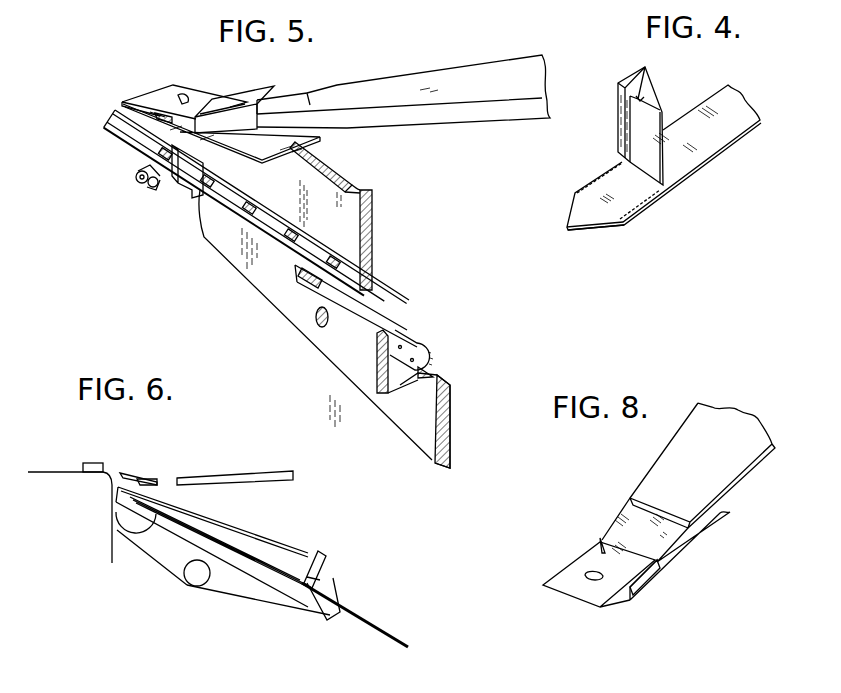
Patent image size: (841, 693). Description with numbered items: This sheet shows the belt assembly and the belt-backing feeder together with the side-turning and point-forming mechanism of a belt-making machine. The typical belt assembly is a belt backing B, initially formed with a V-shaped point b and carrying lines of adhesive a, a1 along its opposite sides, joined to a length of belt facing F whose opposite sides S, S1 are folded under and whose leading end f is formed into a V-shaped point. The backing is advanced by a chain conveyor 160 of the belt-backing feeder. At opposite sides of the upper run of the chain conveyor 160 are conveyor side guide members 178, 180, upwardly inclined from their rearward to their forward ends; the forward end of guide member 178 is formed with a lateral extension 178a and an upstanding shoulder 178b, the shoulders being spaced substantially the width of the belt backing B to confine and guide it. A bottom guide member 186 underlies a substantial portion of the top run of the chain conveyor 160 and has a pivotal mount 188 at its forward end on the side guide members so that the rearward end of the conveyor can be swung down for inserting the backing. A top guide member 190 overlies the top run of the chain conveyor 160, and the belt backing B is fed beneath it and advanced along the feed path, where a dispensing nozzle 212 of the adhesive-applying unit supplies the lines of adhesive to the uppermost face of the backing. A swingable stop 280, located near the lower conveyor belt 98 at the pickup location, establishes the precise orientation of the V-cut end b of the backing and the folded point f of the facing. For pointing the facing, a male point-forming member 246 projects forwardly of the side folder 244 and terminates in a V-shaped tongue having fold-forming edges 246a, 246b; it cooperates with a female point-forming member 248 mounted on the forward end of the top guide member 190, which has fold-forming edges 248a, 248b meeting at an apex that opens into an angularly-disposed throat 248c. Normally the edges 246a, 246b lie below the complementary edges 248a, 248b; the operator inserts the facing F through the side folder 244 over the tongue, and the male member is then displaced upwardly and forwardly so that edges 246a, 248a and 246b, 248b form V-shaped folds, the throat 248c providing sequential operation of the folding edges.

In FIG. 5, the side folder 244 is at (470, 73).
In FIG. 6, the side folder 244 is at (260, 477).
In FIG. 8, the side folder 244 is at (715, 425).
In FIG. 5, the male point-forming member 246 is at (261, 105).
In FIG. 6, the male point-forming member 246 is at (165, 480).
In FIG. 5, the fold-forming edge 246a is at (182, 135).
In FIG. 5, the fold-forming edge 246b is at (233, 100).
In FIG. 5, the female point-forming member 248 is at (159, 99).
In FIG. 6, the female point-forming member 248 is at (133, 472).
In FIG. 8, the female point-forming member 248 is at (583, 555).
In FIG. 5, the fold-forming edge 248a is at (157, 117).
In FIG. 8, the fold-forming edge 248a is at (653, 580).
In FIG. 5, the fold-forming edge 248b is at (217, 108).
In FIG. 8, the fold-forming edge 248b is at (602, 545).
In FIG. 5, the angularly-disposed throat 248c is at (181, 100).
In FIG. 8, the angularly-disposed throat 248c is at (588, 578).
In FIG. 5, the conveyor side guide member 178 is at (226, 231).
In FIG. 5, the lateral extension 178a is at (192, 165).
In FIG. 5, the upstanding shoulder 178b is at (115, 112).
In FIG. 5, the top guide member 190 is at (318, 182).
In FIG. 6, the top guide member 190 is at (217, 523).
In FIG. 5, the pivotal mount 188 is at (317, 323).
In FIG. 5, the conveyor side guide member 180 is at (383, 303).
In FIG. 5, the chain conveyor 160 is at (427, 350).
In FIG. 6, the chain conveyor 160 is at (242, 600).
In FIG. 5, the bottom guide member 186 is at (402, 423).
In FIG. 6, the bottom guide member 186 is at (327, 621).
In FIG. 6, the lower conveyor belt 98 is at (52, 473).
In FIG. 6, the stop 280 is at (95, 462).
In FIG. 6, the dispensing nozzle 212 is at (323, 563).
In FIG. 4, the side of belt facing S is at (620, 117).
In FIG. 4, the side of belt facing S1 is at (660, 163).
In FIG. 4, the leading end of belt facing f is at (648, 85).
In FIG. 4, the belt facing F is at (700, 105).
In FIG. 8, the belt facing F is at (622, 527).
In FIG. 4, the line of adhesive a is at (598, 177).
In FIG. 4, the line of adhesive a1 is at (633, 227).
In FIG. 4, the V-shaped point of belt backing b is at (587, 232).
In FIG. 4, the belt backing B is at (635, 194).
In FIG. 6, the belt backing B is at (382, 628).